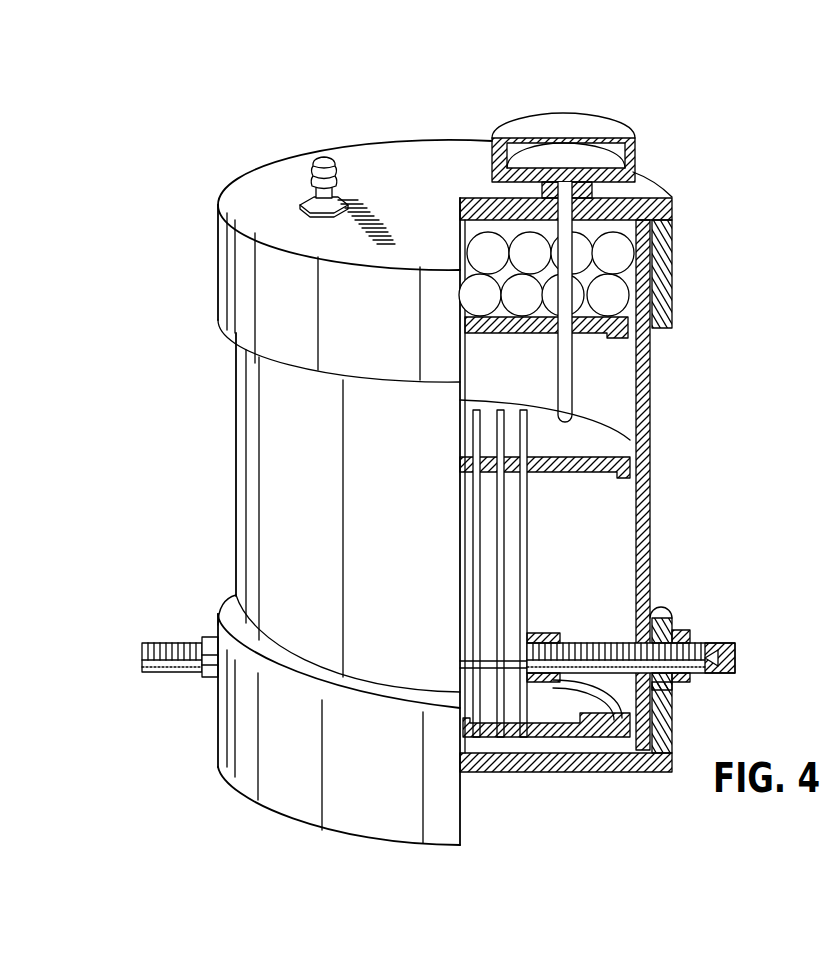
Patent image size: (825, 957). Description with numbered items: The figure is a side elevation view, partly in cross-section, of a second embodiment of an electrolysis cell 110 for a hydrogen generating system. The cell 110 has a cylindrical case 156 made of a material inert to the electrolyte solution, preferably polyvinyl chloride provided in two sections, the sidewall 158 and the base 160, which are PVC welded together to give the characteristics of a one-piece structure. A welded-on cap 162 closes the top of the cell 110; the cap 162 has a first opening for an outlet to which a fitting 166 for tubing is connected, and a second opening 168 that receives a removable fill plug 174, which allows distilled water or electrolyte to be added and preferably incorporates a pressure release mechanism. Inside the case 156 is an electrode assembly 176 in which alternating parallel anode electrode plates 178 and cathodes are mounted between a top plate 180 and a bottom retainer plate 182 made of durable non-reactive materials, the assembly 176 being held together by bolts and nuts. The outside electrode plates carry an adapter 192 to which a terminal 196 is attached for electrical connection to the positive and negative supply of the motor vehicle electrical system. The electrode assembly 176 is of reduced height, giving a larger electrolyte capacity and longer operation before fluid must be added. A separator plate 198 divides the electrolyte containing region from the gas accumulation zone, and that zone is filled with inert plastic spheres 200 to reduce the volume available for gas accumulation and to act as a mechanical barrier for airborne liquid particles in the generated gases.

The electrolysis cell 110 is at (678, 376).
The case 156 is at (277, 487).
The sidewall 158 is at (293, 573).
The base 160 is at (248, 754).
The cap 162 is at (270, 303).
The fitting 166 is at (303, 200).
The second opening 168 is at (597, 190).
The fill plug 174 is at (618, 131).
The electrode assembly 176 is at (545, 510).
The anode electrode plates 178 is at (528, 560).
The top plate 180 is at (598, 444).
The bottom retainer plate 182 is at (588, 710).
The adapter 192 is at (540, 683).
The terminal 196 is at (168, 643).
The separator plate 198 is at (623, 327).
The inert plastic spheres 200 is at (625, 247).